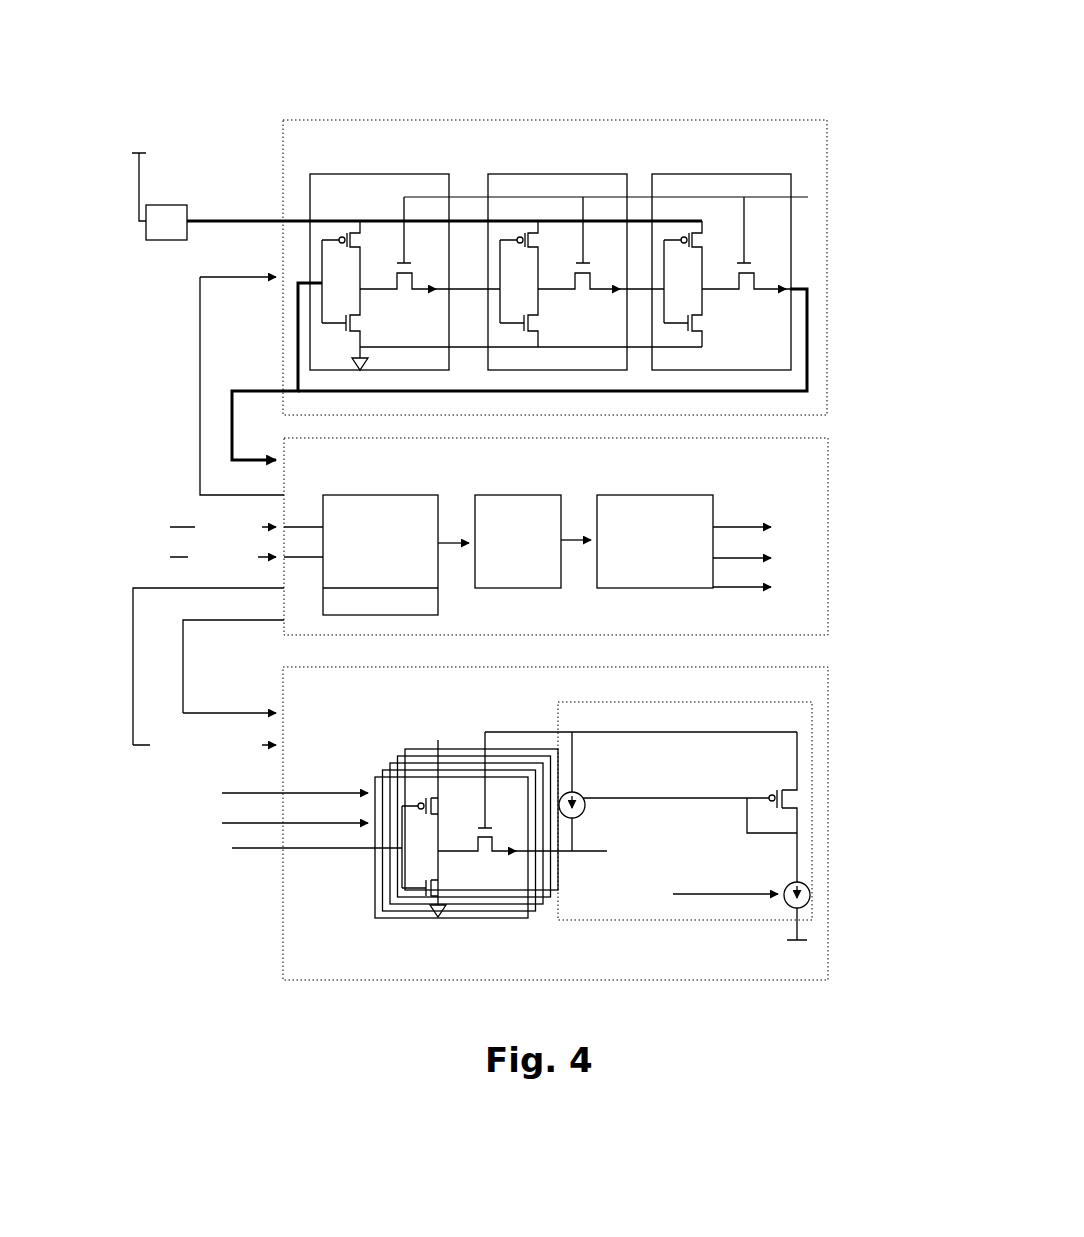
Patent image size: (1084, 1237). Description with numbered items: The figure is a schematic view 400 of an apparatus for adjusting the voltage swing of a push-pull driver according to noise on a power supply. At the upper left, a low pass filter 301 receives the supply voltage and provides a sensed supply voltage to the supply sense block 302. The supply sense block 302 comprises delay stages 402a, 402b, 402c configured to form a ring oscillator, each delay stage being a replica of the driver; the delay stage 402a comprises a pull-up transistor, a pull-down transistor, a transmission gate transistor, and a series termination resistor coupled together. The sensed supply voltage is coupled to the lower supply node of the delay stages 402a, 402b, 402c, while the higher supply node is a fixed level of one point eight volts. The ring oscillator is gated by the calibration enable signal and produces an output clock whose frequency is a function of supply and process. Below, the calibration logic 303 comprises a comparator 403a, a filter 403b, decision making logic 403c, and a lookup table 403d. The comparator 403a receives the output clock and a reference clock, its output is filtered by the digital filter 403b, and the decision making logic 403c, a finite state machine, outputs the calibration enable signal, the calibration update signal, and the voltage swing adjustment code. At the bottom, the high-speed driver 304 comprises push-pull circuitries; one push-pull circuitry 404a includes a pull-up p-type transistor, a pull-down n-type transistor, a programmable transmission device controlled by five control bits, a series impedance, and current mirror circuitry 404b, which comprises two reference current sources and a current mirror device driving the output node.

The schematic view 400 is at (748, 107).
The supply sense block 302 is at (580, 119).
The low pass filter 301 is at (167, 243).
The delay stage 402a is at (340, 180).
The delay stage 402b is at (520, 180).
The delay stage 402c is at (685, 180).
The calibration logic 303 is at (285, 637).
The comparator 403a is at (404, 511).
The filter 403b is at (513, 505).
The decision making logic 403c is at (645, 500).
The LUT 403d is at (440, 600).
The high-speed driver 304 is at (283, 933).
The push-pull circuitry 404a is at (389, 902).
The current mirror circuitry 404b is at (640, 923).